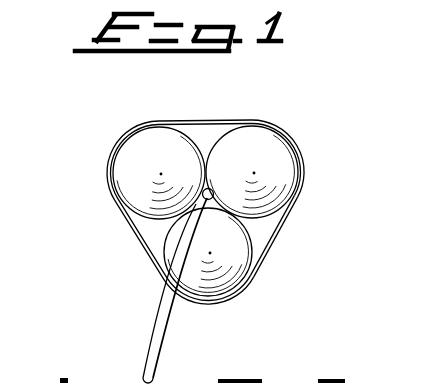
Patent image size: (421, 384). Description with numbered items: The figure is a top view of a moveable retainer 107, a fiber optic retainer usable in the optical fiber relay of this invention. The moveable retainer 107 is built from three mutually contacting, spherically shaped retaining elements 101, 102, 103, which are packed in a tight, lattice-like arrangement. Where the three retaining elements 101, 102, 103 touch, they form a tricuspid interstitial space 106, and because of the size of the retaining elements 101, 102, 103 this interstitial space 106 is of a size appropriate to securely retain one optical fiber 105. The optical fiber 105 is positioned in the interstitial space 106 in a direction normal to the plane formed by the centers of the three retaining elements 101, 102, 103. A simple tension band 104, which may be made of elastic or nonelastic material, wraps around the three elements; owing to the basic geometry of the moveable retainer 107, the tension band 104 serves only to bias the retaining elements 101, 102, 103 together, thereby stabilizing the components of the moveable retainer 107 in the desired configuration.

The retaining element 101 is at (140, 150).
The retaining element 102 is at (270, 148).
The retaining element 103 is at (192, 277).
The tension band 104 is at (127, 222).
The optical fiber 105 is at (191, 165).
The interstitial space 106 is at (280, 213).
The moveable retainer 107 is at (100, 158).